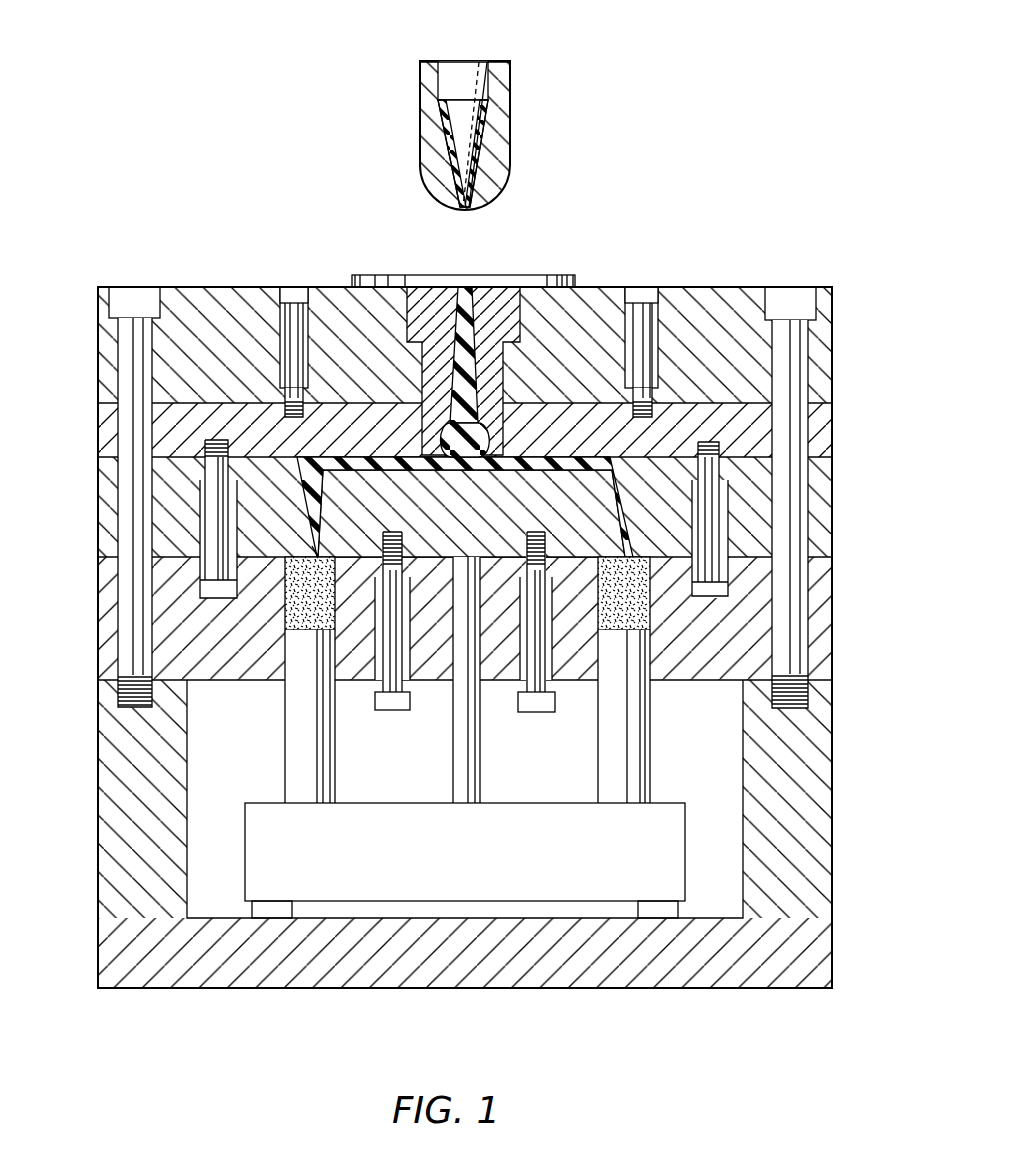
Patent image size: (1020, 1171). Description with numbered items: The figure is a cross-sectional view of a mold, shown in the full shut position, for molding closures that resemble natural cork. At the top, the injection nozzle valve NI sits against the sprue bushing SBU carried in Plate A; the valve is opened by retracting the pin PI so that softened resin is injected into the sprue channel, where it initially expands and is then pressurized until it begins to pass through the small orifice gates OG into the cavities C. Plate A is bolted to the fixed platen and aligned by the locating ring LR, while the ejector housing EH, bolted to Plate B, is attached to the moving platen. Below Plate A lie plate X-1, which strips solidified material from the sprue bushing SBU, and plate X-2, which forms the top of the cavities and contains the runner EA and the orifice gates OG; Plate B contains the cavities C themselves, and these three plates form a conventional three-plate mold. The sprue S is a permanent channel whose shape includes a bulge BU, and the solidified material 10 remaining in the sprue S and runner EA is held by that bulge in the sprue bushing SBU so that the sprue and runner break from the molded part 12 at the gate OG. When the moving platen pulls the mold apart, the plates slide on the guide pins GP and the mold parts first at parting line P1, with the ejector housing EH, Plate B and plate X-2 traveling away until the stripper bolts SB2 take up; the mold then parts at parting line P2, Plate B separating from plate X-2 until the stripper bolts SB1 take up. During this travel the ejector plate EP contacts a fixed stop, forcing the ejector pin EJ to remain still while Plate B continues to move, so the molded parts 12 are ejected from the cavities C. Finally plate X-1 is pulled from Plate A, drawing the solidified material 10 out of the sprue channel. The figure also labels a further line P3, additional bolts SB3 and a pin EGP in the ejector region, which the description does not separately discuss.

The pin PI is at (463, 78).
The injection nozzle valve NI is at (503, 140).
The guide pins GP is at (130, 295).
The socket bolt SB3 is at (293, 296).
The sprue S is at (463, 290).
The sprue bushing SBU is at (490, 300).
The locating ring LR is at (562, 279).
The Plate A is at (820, 350).
The parting line P3 is at (88, 404).
The parting line P1 is at (88, 457).
The parting line P2 is at (93, 556).
The Plate X-1 is at (820, 432).
The Plate X-2 is at (822, 487).
The runner EA is at (363, 462).
The bulge BU is at (483, 433).
The solidified material 10 is at (592, 473).
The orifice gate OG is at (317, 547).
The stripper bolts SB2 is at (212, 557).
The molded part 12 is at (303, 633).
The stripper bolts SB1 is at (392, 706).
The ejector guide pin EGP is at (468, 767).
The ejector pin EJ is at (633, 722).
The cavities C is at (640, 610).
The Plate B is at (818, 650).
The ejector housing EH is at (800, 795).
The ejector plate EP is at (487, 870).